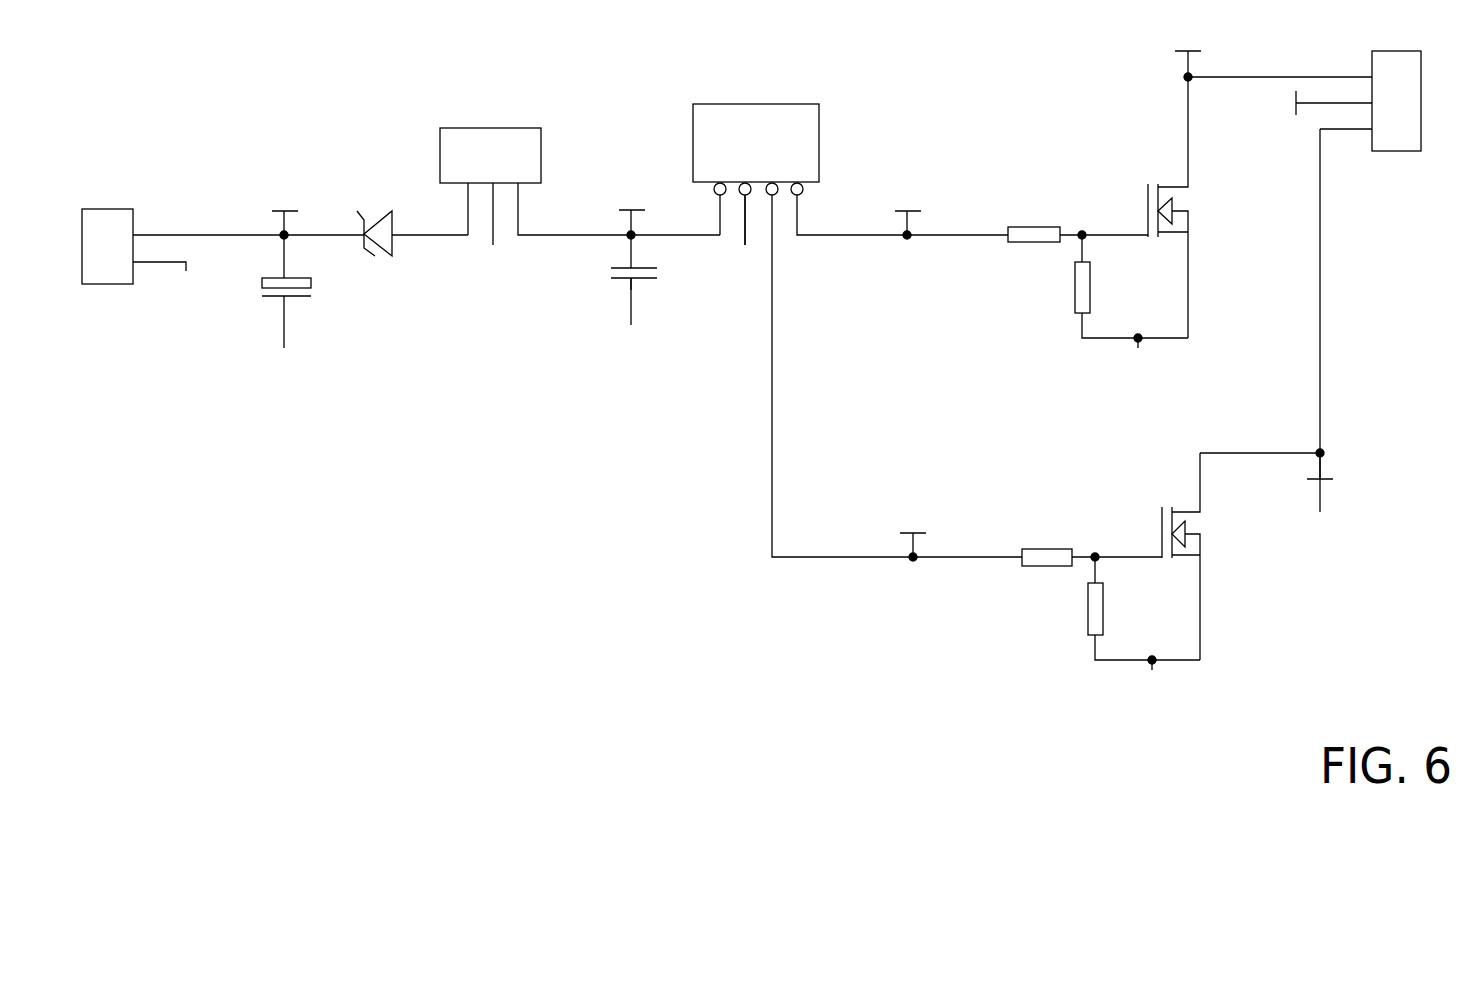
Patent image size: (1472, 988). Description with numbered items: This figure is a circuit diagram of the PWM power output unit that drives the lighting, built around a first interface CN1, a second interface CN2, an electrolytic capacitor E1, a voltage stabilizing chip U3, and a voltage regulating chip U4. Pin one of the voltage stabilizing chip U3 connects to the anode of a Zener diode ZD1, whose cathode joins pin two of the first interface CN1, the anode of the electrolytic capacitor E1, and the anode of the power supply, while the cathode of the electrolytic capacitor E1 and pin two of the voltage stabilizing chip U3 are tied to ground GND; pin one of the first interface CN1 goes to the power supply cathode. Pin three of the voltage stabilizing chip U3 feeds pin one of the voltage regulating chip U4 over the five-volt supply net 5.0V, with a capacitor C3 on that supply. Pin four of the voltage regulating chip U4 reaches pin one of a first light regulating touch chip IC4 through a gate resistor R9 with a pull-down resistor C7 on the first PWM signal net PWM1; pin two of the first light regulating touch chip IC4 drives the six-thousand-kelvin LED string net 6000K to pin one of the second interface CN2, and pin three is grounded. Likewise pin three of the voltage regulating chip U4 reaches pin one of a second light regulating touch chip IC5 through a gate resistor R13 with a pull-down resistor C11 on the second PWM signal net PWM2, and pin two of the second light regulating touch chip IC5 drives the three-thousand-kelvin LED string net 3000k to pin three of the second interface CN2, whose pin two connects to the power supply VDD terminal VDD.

The first interface CN1 is at (183, 235).
The power supply VDD terminal VDD is at (818, 165).
The Zener diode ZD1 is at (376, 215).
The electrolytic capacitor E1 is at (303, 269).
The voltage stabilizing chip U3 is at (580, 169).
The 5V supply net 5.0V is at (634, 214).
The capacitor C3 is at (620, 262).
The voltage regulating chip U4 is at (857, 318).
The PWM signal 1 net PWM1 is at (900, 214).
The gate resistor 22R R9 is at (1075, 234).
The pull-down resistor 10K C7 is at (1131, 288).
The first light regulating touch chip IC4 is at (1186, 207).
The 6000K LED string net 6000K is at (1264, 56).
The second interface CN2 is at (1370, 255).
The 3000K LED string net 3000k is at (1275, 480).
The PWM signal 2 net PWM2 is at (907, 536).
The gate resistor 22R R13 is at (1089, 557).
The pull-down resistor 10K C11 is at (1144, 610).
The second light regulating touch chip IC5 is at (1205, 556).
The ground GND is at (650, 446).